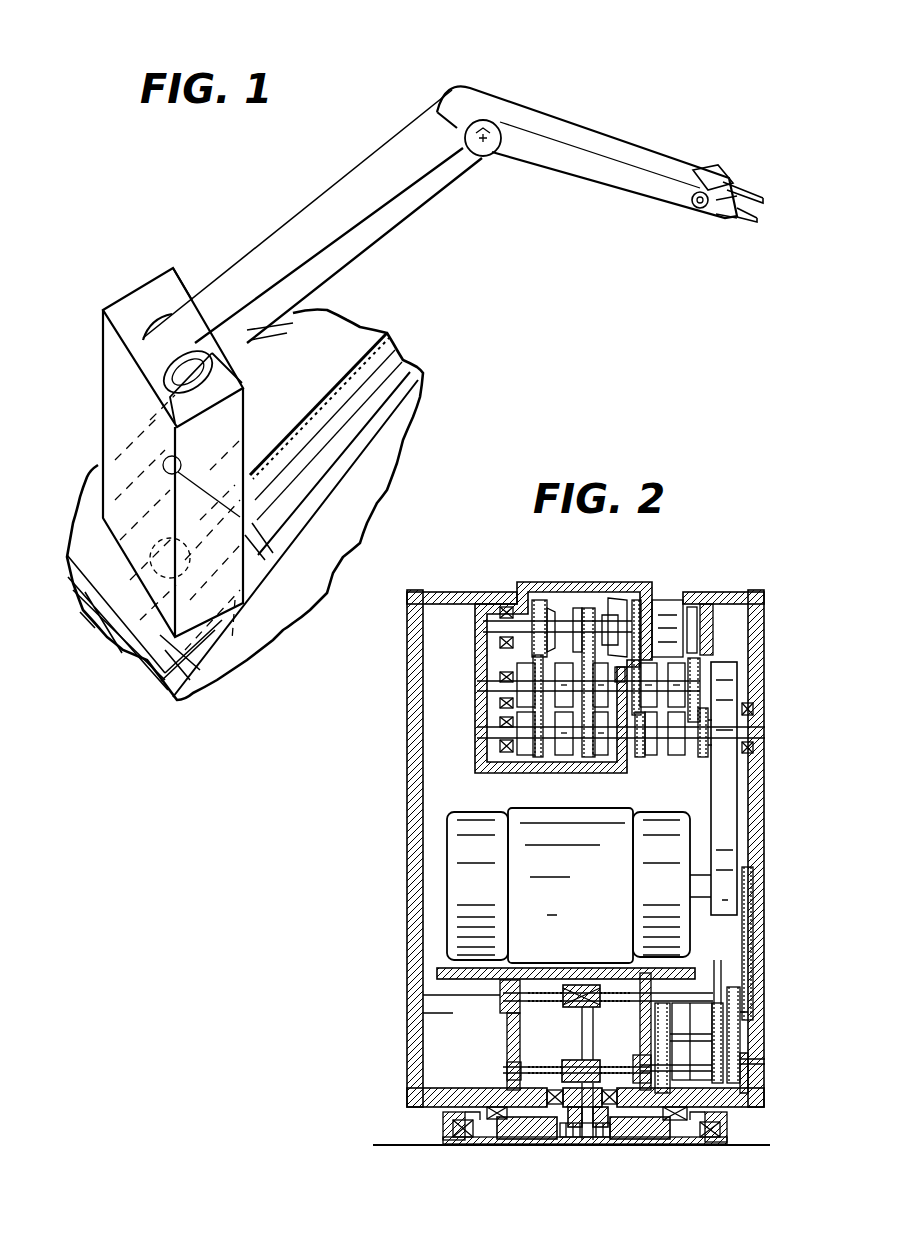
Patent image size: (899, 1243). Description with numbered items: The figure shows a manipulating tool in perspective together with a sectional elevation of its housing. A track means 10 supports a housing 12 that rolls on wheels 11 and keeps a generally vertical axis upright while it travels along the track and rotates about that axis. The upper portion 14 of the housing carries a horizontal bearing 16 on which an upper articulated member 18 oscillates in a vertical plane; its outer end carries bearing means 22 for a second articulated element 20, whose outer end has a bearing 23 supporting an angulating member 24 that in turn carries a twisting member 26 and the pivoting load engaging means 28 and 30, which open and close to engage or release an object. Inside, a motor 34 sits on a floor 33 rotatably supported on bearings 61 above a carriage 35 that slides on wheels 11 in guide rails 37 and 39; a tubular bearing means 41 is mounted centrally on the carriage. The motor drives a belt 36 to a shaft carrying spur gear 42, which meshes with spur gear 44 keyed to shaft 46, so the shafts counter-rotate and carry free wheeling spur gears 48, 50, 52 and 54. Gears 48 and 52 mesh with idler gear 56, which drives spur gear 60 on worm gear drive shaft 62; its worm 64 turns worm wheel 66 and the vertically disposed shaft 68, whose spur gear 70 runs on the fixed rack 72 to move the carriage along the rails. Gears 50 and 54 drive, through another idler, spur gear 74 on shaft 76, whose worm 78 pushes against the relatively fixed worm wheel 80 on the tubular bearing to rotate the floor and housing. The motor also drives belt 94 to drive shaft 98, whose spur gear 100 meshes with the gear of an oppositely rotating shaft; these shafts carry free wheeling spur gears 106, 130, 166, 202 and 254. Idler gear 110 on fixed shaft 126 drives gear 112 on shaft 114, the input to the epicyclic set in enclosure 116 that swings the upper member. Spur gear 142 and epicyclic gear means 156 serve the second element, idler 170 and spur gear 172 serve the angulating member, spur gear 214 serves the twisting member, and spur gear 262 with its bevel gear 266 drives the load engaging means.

In FIG. 1, the track means 10 is at (428, 369).
In FIG. 2, the track means 10 is at (430, 1141).
In FIG. 1, the wheels 11 is at (72, 603).
In FIG. 2, the wheels 11 is at (465, 1140).
In FIG. 1, the housing 12 is at (110, 340).
In FIG. 2, the housing 12 is at (412, 816).
In FIG. 1, the upper portion of the housing 14 is at (202, 284).
In FIG. 2, the horizontal bearing 16 is at (487, 627).
In FIG. 1, the upper articulated member 18 is at (383, 162).
In FIG. 2, the upper articulated member 18 is at (613, 600).
In FIG. 1, the second articulated element 20 is at (612, 145).
In FIG. 1, the bearing means 22 is at (490, 156).
In FIG. 1, the bearing 23 is at (698, 207).
In FIG. 1, the angulating member 24 is at (707, 177).
In FIG. 1, the twisting member 26 is at (720, 220).
In FIG. 1, the load engaging means 28 is at (745, 222).
In FIG. 1, the load engaging means 30 is at (750, 187).
In FIG. 1, the floor 33 is at (127, 618).
In FIG. 2, the floor 33 is at (450, 1093).
In FIG. 2, the motor 34 is at (483, 890).
In FIG. 1, the carriage 35 is at (118, 658).
In FIG. 2, the carriage 35 is at (533, 1140).
In FIG. 2, the drive belt 36 is at (747, 918).
In FIG. 1, the guide rail 37 is at (376, 415).
In FIG. 2, the guide rail 37 is at (725, 1130).
In FIG. 1, the guide rail 39 is at (290, 327).
In FIG. 2, the guide rail 39 is at (445, 1122).
In FIG. 2, the tubular bearing means 41 is at (605, 1140).
In FIG. 2, the spur gear 42 is at (740, 982).
In FIG. 2, the spur gear 44 is at (742, 1067).
In FIG. 2, the shaft 46 is at (745, 1062).
In FIG. 2, the free wheeling spur gear 48 is at (710, 987).
In FIG. 2, the free wheeling spur gear 50 is at (630, 990).
In FIG. 2, the free wheeling spur gear 52 is at (742, 1080).
In FIG. 2, the free wheeling spur gear 54 is at (655, 1070).
In FIG. 2, the idler gear 56 is at (747, 1038).
In FIG. 2, the spur gear 60 is at (717, 962).
In FIG. 2, the bearings 61 is at (497, 1120).
In FIG. 2, the worm gear drive shaft 62 is at (525, 993).
In FIG. 2, the worm 64 is at (582, 987).
In FIG. 2, the worm wheel 66 is at (550, 993).
In FIG. 2, the vertically disposed shaft 68 is at (582, 1023).
In FIG. 1, the spur gear 70 is at (232, 645).
In FIG. 2, the spur gear 70 is at (587, 1137).
In FIG. 1, the rack 72 is at (381, 335).
In FIG. 2, the rack 72 is at (620, 1143).
In FIG. 2, the spur gear 74 is at (670, 1137).
In FIG. 2, the shaft 76 is at (525, 1068).
In FIG. 2, the worm 78 is at (580, 1067).
In FIG. 2, the worm wheel 80 is at (523, 1053).
In FIG. 2, the belt 94 is at (728, 783).
In FIG. 2, the drive shaft 98 is at (490, 732).
In FIG. 2, the spur gear 100 is at (706, 757).
In FIG. 2, the free wheeling spur gear 106 is at (700, 753).
In FIG. 2, the idler gear 110 is at (705, 663).
In FIG. 2, the gear 112 is at (698, 637).
In FIG. 2, the shaft 114 is at (708, 605).
In FIG. 2, the enclosure 116 is at (675, 594).
In FIG. 2, the fixed shaft 126 is at (492, 687).
In FIG. 2, the free wheeling spur gear 130 is at (640, 757).
In FIG. 2, the spur gear 142 is at (637, 600).
In FIG. 1, the epicyclic gear means 156 is at (471, 172).
In FIG. 2, the free wheeling spur gear 166 is at (540, 757).
In FIG. 2, the idler 170 is at (535, 673).
In FIG. 2, the spur gear 172 is at (538, 600).
In FIG. 2, the spur gear 202 is at (582, 757).
In FIG. 2, the spur gear 214 is at (575, 610).
In FIG. 2, the free wheeling spur gear 254 is at (601, 757).
In FIG. 2, the spur gear 262 is at (585, 608).
In FIG. 2, the bevel gear 266 is at (613, 600).